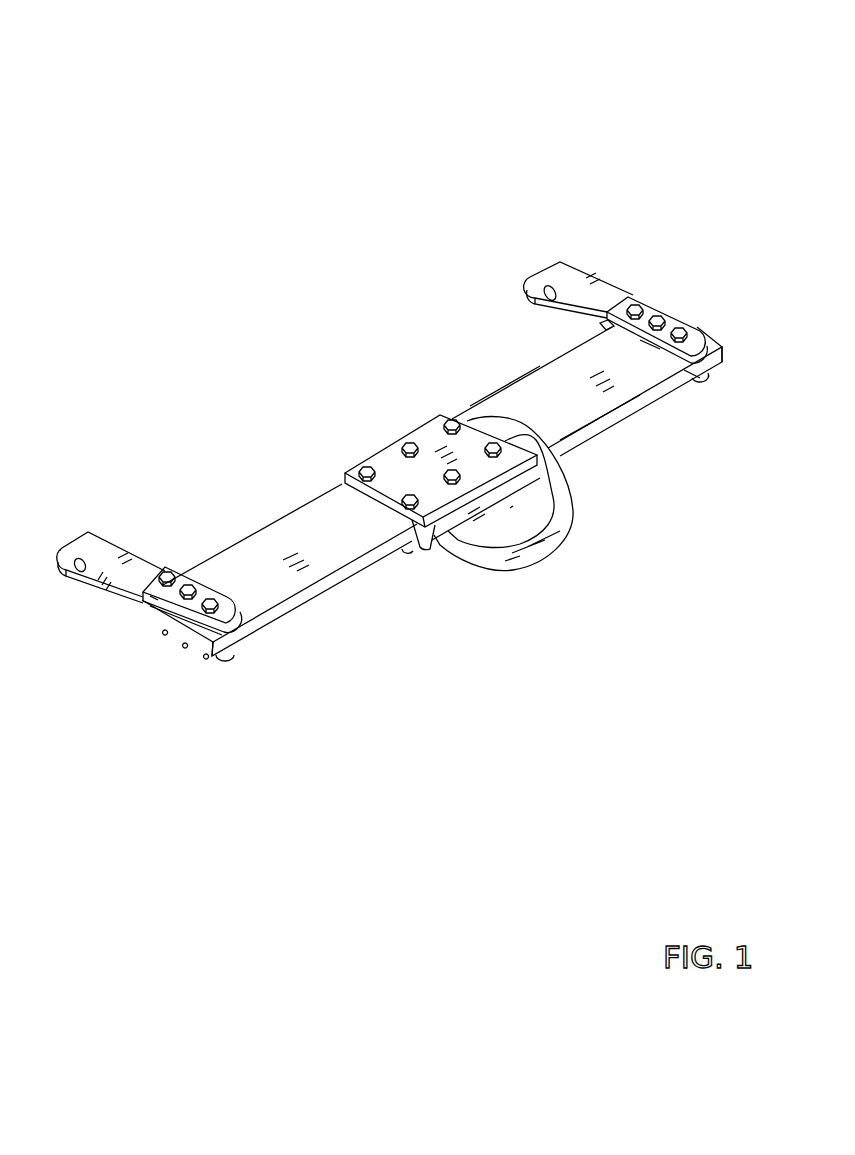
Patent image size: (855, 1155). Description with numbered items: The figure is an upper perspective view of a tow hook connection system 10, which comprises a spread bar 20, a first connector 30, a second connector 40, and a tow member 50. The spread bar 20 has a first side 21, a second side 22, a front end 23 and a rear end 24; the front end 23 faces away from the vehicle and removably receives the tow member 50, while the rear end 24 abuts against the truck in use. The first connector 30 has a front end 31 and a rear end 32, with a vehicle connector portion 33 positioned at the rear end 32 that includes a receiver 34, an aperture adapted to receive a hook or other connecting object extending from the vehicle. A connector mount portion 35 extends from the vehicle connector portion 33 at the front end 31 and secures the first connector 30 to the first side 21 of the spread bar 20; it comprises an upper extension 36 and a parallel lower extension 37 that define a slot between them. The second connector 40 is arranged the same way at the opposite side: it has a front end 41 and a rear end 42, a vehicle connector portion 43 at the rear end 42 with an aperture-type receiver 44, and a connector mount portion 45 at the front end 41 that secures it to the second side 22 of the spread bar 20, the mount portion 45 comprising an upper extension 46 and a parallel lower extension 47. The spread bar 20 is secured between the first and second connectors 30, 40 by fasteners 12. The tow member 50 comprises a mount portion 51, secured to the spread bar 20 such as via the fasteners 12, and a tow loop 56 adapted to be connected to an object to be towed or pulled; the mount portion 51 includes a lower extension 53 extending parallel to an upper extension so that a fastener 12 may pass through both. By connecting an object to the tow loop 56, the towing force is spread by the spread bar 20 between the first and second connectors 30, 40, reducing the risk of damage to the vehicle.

The tow hook connection system 10 is at (209, 111).
The fasteners 12 is at (603, 328).
The spread bar 20 is at (346, 583).
The first side 21 is at (200, 648).
The second side 22 is at (709, 345).
The front end 23 is at (597, 428).
The rear end 24 is at (497, 387).
The first connector 30 is at (115, 540).
The front end 31 is at (237, 627).
The rear end 32 is at (80, 540).
The vehicle connector portion 33 is at (103, 578).
The receiver 34 is at (82, 571).
The connector mount portion 35 is at (205, 585).
The upper extension 36 is at (167, 568).
The lower extension 37 is at (226, 662).
The second connector 40 is at (585, 270).
The front end 41 is at (697, 378).
The rear end 42 is at (542, 266).
The vehicle connector portion 43 is at (598, 328).
The receiver 44 is at (545, 294).
The connector mount portion 45 is at (648, 315).
The upper extension 46 is at (673, 328).
The lower extension 47 is at (697, 385).
The tow member 50 is at (392, 438).
The mount portion 51 is at (388, 460).
The lower extension 53 is at (420, 423).
The tow loop 56 is at (555, 553).